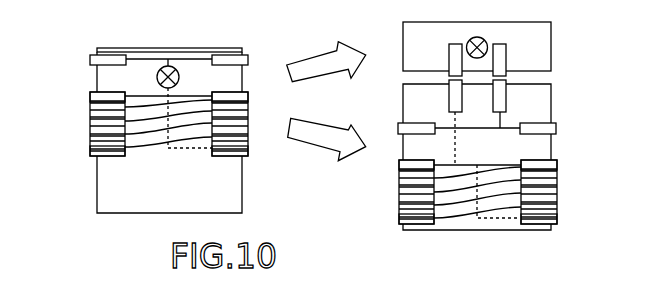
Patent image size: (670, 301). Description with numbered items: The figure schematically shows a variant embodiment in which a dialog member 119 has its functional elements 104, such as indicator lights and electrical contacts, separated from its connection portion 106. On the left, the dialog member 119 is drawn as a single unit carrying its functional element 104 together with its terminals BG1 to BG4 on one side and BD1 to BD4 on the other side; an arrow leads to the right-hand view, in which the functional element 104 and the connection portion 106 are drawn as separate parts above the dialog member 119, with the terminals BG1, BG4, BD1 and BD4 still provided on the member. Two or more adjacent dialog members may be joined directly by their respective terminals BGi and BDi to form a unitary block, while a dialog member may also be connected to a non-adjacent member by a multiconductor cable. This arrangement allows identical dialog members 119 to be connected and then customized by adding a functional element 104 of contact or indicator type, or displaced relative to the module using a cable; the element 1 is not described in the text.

The electrode pad 1 is at (90, 57).
The terminal BGi BG1 is at (89, 96).
The terminal BGi BG4 is at (89, 148).
The terminal BDi BD1 is at (249, 97).
The terminal BDi BD4 is at (248, 149).
The dialog member 119 is at (104, 188).
The functional element 104 is at (537, 50).
The connection portion 106 is at (537, 153).